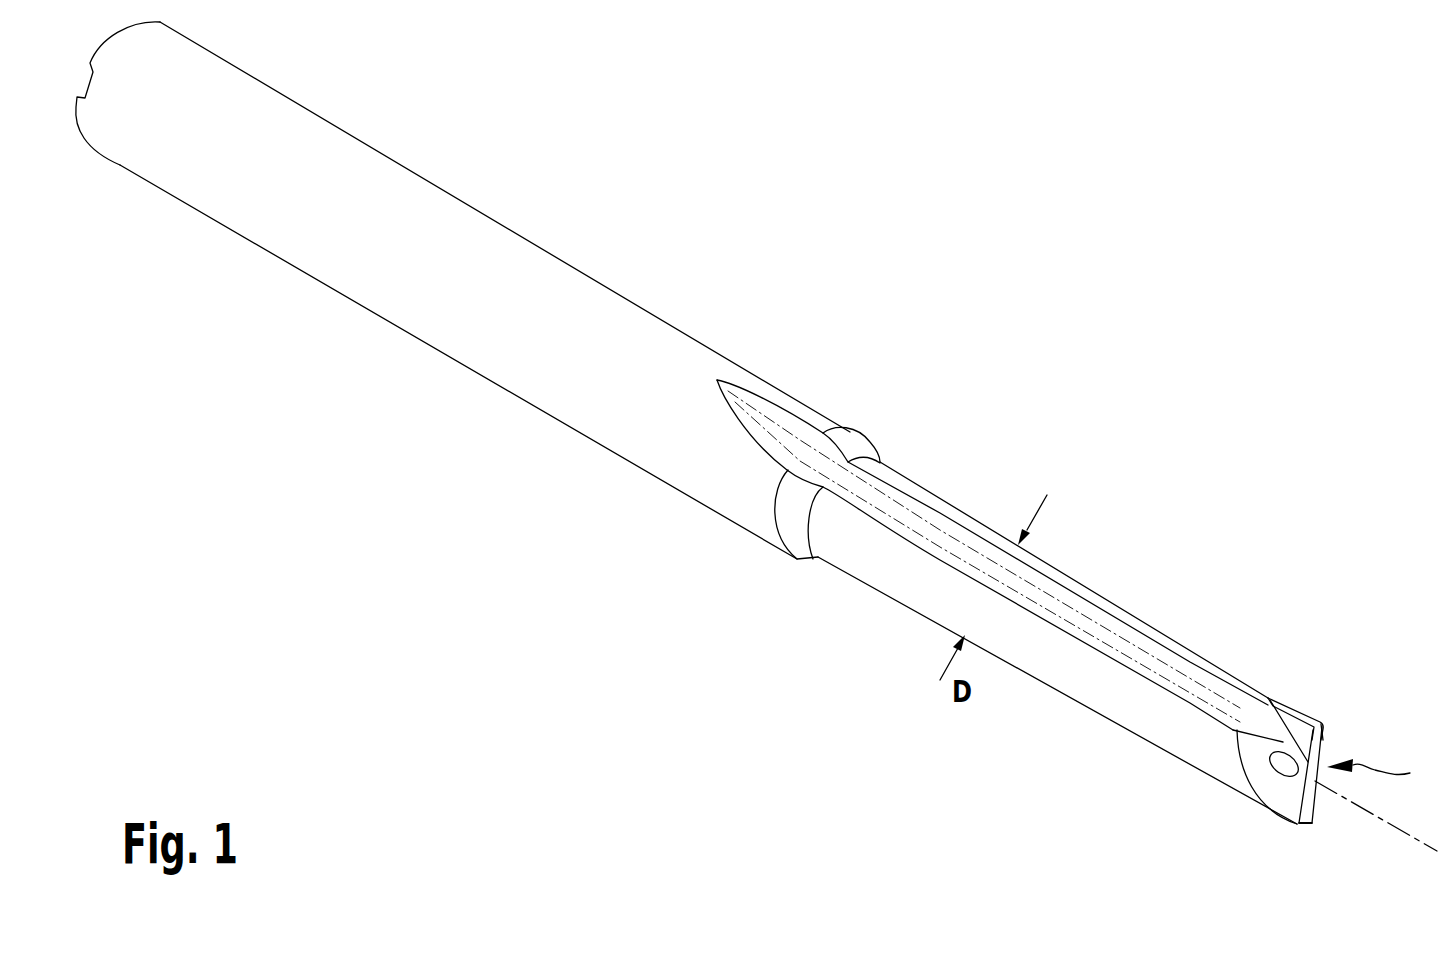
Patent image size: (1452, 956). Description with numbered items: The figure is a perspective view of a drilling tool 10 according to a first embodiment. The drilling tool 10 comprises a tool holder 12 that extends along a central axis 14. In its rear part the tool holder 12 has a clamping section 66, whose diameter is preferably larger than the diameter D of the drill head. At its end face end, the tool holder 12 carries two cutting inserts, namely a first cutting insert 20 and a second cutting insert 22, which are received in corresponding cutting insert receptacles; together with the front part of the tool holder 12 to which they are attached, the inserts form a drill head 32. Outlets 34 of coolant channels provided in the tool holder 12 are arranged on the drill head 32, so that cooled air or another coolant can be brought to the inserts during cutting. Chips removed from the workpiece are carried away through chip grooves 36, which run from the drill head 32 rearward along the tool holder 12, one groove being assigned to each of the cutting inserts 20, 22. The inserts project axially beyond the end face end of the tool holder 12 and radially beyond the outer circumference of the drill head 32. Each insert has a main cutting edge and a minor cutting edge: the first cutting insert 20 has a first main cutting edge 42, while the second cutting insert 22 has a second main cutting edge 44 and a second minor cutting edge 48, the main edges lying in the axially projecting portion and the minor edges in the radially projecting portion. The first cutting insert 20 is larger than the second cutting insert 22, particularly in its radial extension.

The drilling tool 10 is at (1076, 246).
The tool holder 12 is at (550, 277).
The clamping section 66 is at (513, 363).
The chip grooves 36 is at (1092, 620).
The second cutting insert 22 is at (1297, 733).
The second minor cutting edge 48 is at (1290, 703).
The second main cutting edge 44 is at (1323, 743).
The drill head 32 is at (1386, 770).
The coolant outlets 34 is at (1268, 775).
The first main cutting edge 42 is at (1315, 797).
The first cutting insert 20 is at (1307, 827).
The central axis 14 is at (1430, 847).